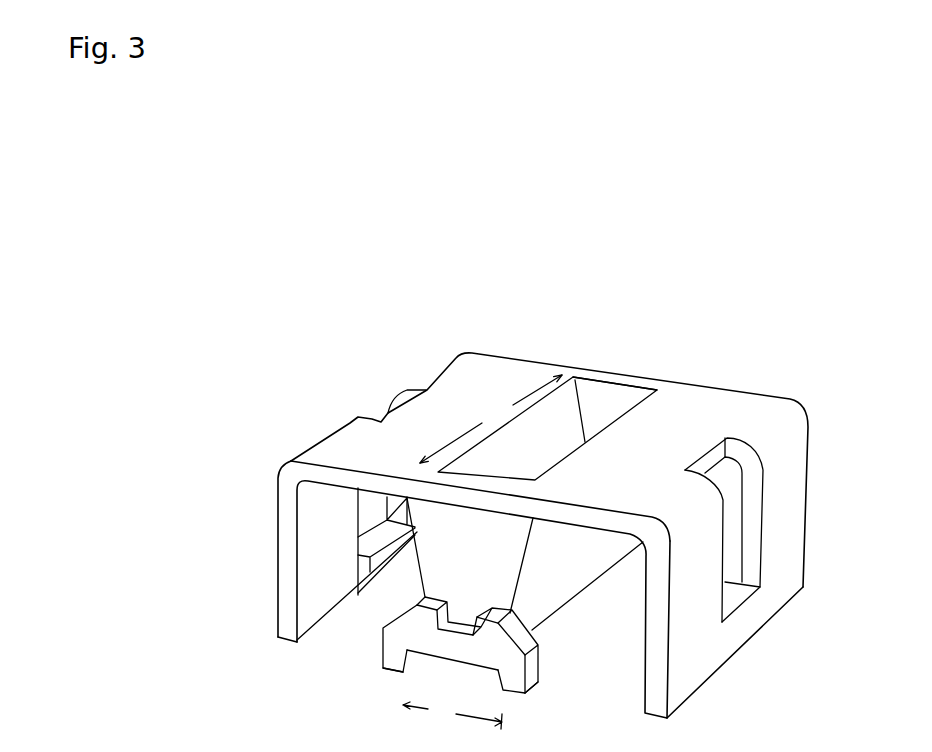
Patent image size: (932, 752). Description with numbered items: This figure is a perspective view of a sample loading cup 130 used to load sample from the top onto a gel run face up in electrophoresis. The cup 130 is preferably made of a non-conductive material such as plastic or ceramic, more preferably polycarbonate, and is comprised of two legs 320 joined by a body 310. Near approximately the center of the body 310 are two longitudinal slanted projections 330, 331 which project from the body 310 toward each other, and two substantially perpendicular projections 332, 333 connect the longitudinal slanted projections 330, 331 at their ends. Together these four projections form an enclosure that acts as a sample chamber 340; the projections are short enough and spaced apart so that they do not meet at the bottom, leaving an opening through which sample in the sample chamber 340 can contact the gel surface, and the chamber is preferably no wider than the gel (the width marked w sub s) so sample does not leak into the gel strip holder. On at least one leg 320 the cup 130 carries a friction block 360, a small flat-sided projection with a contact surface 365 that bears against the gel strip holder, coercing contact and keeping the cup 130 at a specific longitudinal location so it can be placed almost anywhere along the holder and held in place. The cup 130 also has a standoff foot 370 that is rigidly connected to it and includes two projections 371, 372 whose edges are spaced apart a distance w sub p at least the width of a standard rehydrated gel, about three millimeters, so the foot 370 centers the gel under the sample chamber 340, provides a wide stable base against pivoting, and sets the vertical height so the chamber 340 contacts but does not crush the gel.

The sample loading cup 130 is at (169, 298).
The body 310 is at (703, 398).
The leg 320 is at (800, 492).
The longitudinal slanted projection 330 is at (552, 413).
The longitudinal slanted projection 331 is at (543, 614).
The perpendicular projection 332 is at (480, 553).
The perpendicular projection 333 is at (630, 387).
The sample chamber 340 is at (570, 417).
The friction block 360 is at (730, 598).
The contact surface 365 is at (397, 542).
The standoff foot 370 is at (398, 643).
The projection 371 is at (392, 655).
The projection 372 is at (520, 687).